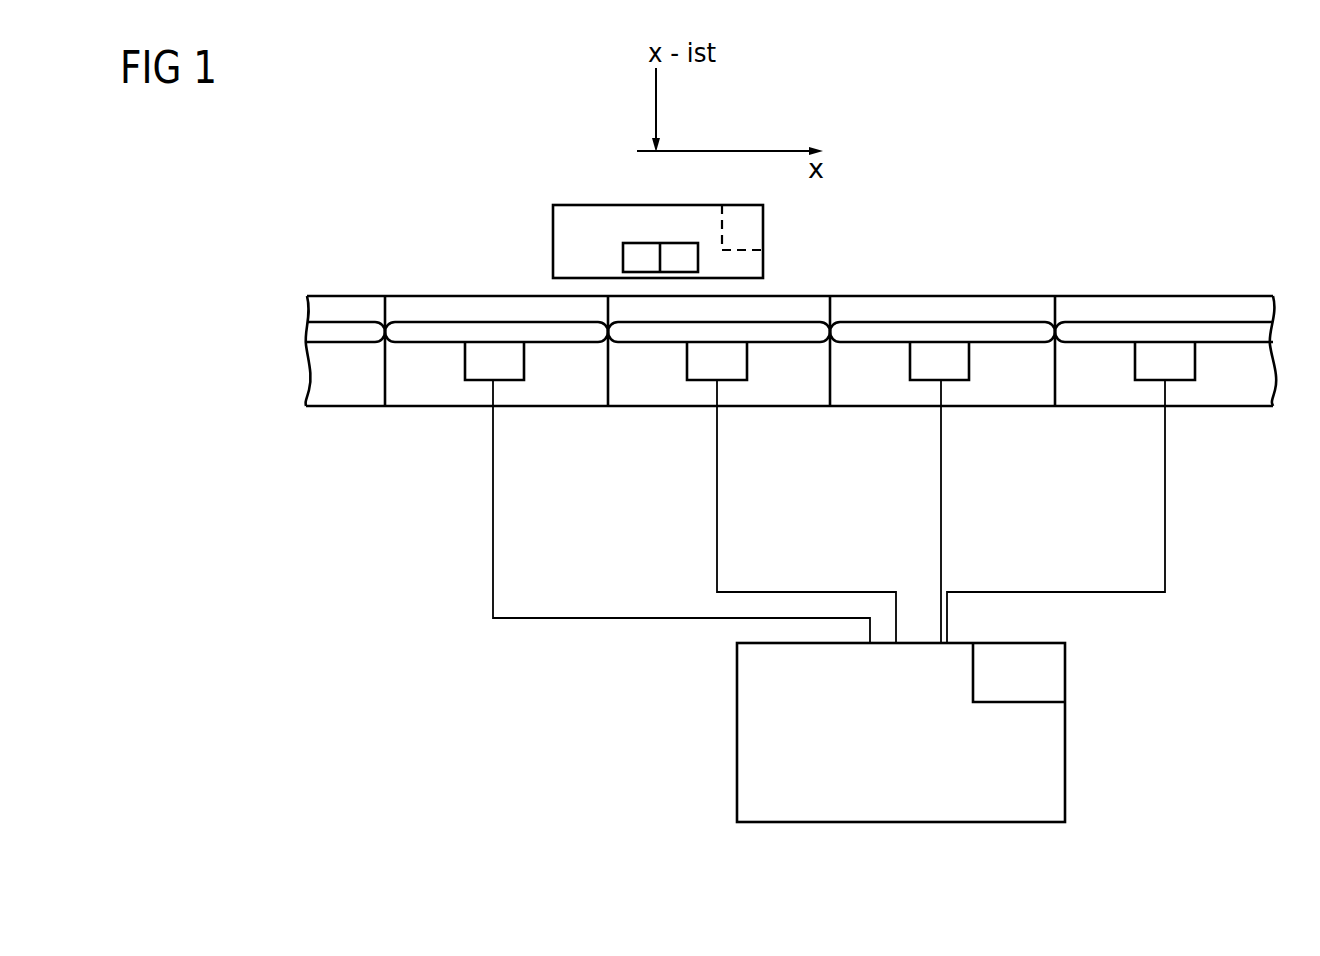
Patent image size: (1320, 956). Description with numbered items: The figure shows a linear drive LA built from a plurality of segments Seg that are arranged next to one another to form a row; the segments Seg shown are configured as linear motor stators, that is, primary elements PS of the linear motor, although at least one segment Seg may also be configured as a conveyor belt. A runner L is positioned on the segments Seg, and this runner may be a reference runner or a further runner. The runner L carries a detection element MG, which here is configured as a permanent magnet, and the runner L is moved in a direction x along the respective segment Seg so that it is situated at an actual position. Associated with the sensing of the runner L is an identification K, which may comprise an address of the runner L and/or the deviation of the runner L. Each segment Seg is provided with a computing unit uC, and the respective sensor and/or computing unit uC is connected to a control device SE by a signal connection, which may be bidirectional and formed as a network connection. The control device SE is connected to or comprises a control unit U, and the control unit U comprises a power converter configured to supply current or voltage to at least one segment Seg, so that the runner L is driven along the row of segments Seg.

The linear drive LA is at (254, 180).
The segment Seg is at (1142, 283).
The primary part PS is at (1245, 332).
The computing unit uC is at (478, 361).
The runner L is at (618, 194).
The detection element MG is at (608, 250).
The identification K is at (740, 232).
The control device SE is at (1050, 777).
The control unit U is at (1050, 673).